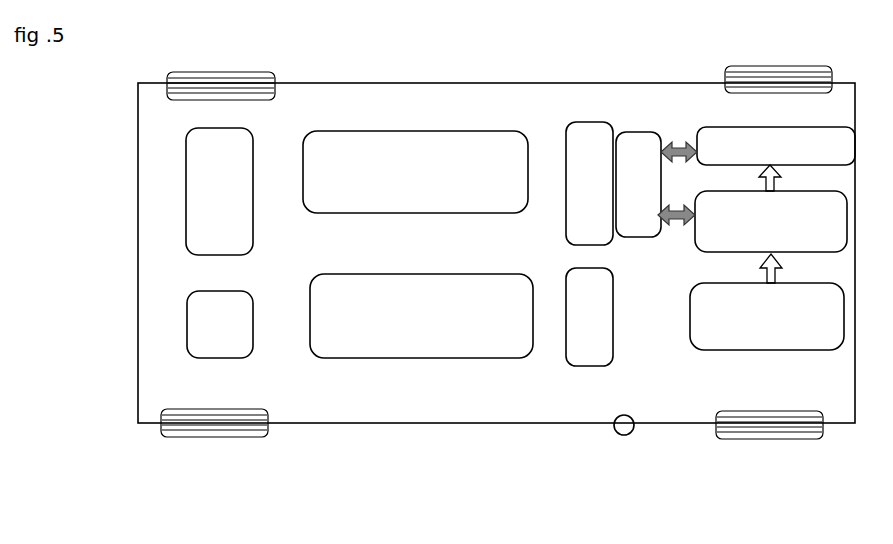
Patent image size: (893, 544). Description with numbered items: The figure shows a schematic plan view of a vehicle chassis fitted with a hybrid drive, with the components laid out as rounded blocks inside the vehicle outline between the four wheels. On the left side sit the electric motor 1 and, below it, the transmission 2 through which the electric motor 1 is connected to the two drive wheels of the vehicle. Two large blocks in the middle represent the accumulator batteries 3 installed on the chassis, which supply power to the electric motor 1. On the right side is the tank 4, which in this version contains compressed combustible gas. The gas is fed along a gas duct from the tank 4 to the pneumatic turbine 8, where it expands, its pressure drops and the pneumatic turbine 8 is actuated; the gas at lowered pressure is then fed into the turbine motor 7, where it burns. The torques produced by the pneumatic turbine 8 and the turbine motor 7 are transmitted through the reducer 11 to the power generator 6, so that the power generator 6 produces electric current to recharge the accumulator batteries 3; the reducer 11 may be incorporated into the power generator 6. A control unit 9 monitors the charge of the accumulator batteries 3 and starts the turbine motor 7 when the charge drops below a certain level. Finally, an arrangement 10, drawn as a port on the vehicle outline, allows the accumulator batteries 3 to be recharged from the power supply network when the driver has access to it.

The electric motor 1 is at (219, 191).
The transmission 2 is at (220, 324).
The accumulator batteries 3 is at (418, 244).
The tank 4 is at (767, 316).
The power generator 6 is at (589, 183).
The turbine motor 7 is at (776, 146).
The pneumatic turbine 8 is at (771, 221).
The control unit 9 is at (589, 317).
The arrangement for recharge 10 is at (680, 476).
The reducer 11 is at (638, 184).